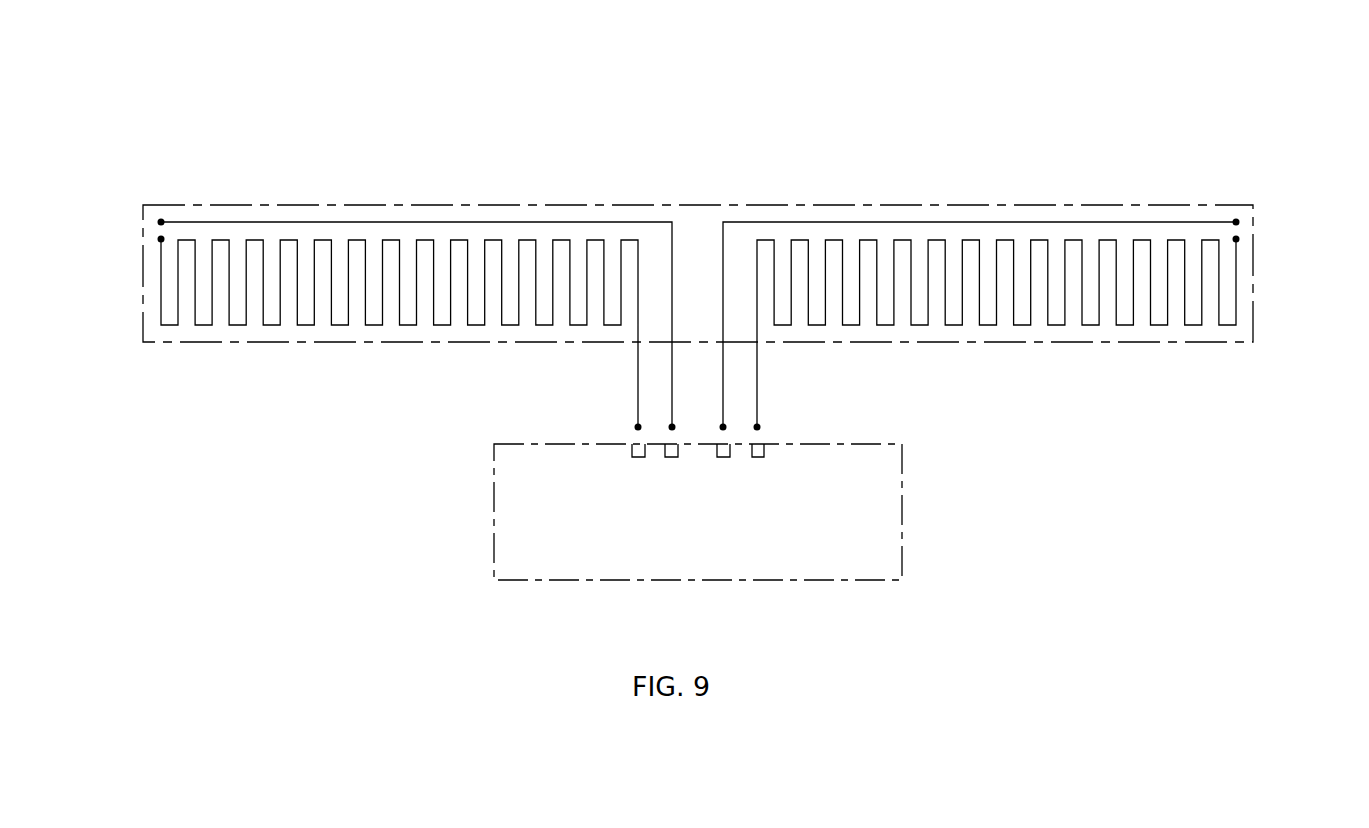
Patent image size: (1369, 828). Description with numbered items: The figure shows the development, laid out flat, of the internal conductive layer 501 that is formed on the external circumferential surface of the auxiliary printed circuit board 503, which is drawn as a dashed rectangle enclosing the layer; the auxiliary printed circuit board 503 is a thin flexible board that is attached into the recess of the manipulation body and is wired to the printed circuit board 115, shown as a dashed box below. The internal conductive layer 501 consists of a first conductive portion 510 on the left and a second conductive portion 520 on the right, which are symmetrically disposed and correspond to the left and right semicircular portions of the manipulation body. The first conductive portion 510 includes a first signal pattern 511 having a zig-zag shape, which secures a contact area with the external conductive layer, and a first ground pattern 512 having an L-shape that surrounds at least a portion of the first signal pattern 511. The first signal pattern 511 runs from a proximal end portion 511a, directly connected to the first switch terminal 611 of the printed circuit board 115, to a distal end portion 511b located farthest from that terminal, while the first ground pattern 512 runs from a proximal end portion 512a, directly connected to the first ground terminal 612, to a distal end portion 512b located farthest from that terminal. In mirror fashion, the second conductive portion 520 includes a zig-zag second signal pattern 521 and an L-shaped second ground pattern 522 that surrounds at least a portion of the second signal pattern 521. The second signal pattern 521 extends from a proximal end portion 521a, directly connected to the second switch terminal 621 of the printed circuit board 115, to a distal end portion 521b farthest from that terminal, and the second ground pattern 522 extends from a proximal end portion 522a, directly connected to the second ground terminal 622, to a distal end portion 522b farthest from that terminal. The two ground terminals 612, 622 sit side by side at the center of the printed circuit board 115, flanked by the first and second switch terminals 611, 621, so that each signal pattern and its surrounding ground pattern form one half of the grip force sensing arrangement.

The internal conductive layer 501 is at (158, 70).
The auxiliary printed circuit board 503 is at (1253, 322).
The first conductive portion 510 is at (418, 212).
The first signal pattern 511 is at (237, 325).
The proximal end portion of the first signal pattern 511a is at (638, 427).
The distal end portion of the first signal pattern 511b is at (161, 239).
The first ground pattern 512 is at (553, 222).
The proximal end portion of the first ground pattern 512a is at (672, 427).
The distal end portion of the first ground pattern 512b is at (161, 222).
The second conductive portion 520 is at (978, 212).
The second signal pattern 521 is at (1158, 325).
The proximal end portion of the second signal pattern 521a is at (757, 427).
The distal end portion of the second signal pattern 521b is at (1236, 239).
The second ground pattern 522 is at (840, 222).
The proximal end portion of the second ground pattern 522a is at (723, 427).
The distal end portion of the second ground pattern 522b is at (1236, 222).
The printed circuit board 115 is at (905, 510).
The first switch terminal 611 is at (631, 450).
The first ground terminal 612 is at (680, 458).
The second switch terminal 621 is at (765, 450).
The second ground terminal 622 is at (716, 450).